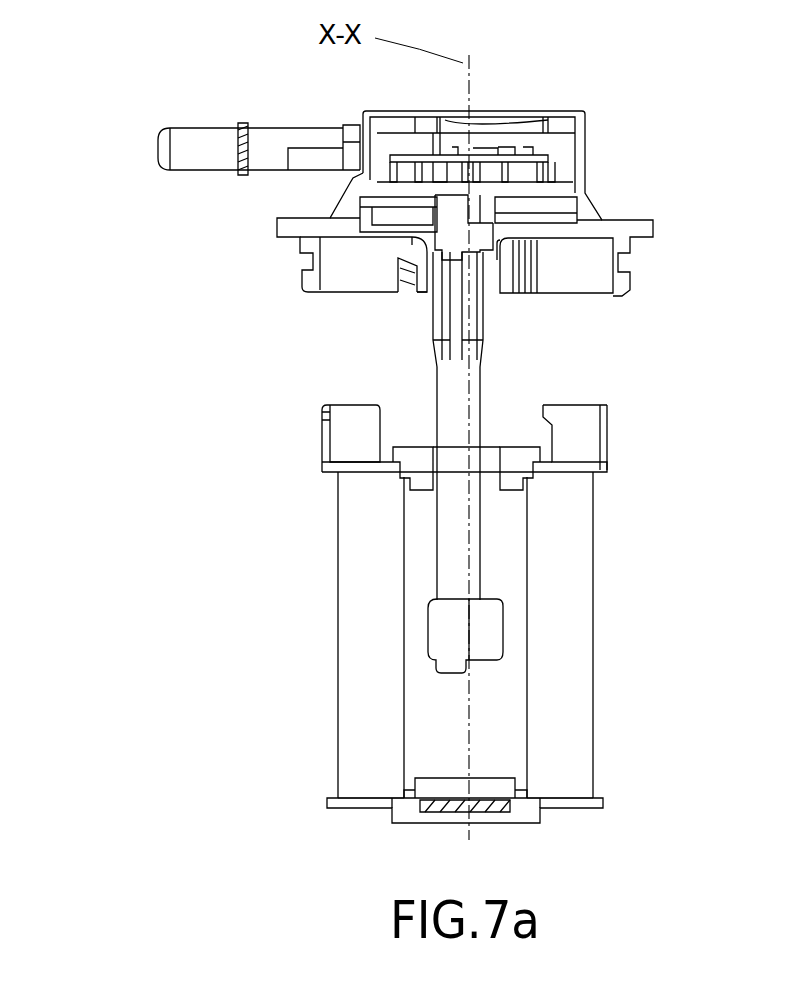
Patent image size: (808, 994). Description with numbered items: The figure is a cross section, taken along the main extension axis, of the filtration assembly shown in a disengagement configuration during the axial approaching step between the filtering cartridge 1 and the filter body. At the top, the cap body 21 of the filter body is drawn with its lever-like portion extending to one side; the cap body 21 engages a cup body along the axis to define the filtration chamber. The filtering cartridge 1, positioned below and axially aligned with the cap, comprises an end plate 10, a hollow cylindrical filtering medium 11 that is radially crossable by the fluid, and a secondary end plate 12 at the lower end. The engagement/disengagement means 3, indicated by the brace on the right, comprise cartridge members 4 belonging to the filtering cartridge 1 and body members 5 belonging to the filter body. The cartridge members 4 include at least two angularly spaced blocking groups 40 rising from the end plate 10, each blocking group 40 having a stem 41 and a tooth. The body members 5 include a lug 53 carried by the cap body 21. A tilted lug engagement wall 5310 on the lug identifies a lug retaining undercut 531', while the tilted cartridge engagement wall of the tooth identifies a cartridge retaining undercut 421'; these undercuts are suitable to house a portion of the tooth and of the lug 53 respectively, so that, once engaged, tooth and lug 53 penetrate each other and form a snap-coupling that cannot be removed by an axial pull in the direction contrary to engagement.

The filtering cartridge 1 is at (285, 590).
The engagement/disengagement means 3 is at (697, 225).
The cartridge members 4 is at (268, 433).
The body members 5 is at (345, 258).
The end plate 10 is at (605, 470).
The filtering medium 11 is at (570, 612).
The secondary end plate 12 is at (610, 803).
The cap body 21 is at (186, 222).
The blocking group 40 is at (322, 412).
The stem 41 is at (577, 430).
The lug 53 is at (392, 272).
The lug retaining undercut 531' is at (282, 140).
The lug engagement wall 5310 is at (395, 292).
The cartridge retaining undercut 421' is at (267, 510).